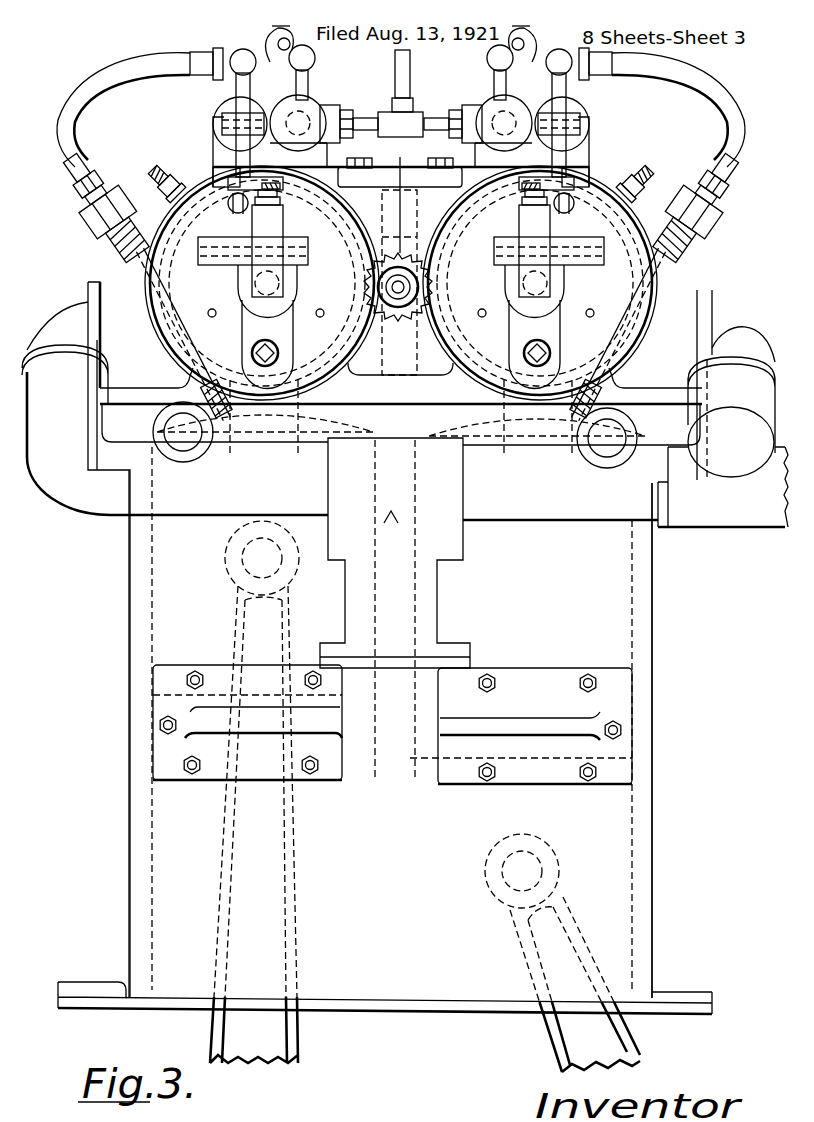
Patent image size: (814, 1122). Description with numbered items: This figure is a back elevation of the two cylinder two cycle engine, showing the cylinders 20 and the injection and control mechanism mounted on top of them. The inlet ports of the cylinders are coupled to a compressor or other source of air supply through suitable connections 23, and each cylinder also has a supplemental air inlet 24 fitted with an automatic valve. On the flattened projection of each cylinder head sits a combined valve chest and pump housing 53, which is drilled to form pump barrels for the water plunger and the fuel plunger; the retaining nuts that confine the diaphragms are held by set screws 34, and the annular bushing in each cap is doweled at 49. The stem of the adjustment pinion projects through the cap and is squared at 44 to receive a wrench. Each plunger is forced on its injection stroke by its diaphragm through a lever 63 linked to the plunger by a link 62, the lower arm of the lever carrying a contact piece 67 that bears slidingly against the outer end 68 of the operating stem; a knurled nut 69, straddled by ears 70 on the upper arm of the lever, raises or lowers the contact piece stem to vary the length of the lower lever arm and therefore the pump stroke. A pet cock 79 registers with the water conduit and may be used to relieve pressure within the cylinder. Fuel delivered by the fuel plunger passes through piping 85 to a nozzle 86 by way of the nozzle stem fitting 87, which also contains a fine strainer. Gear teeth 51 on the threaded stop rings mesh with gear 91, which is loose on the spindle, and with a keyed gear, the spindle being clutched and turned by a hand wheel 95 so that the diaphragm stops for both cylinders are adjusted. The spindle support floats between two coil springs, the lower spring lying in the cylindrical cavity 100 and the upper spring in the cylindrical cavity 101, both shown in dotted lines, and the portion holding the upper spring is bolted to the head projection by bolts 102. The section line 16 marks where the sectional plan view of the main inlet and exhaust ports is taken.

The crosshead guide plate 16 is at (120, 724).
The cylinders 20 is at (168, 625).
The connections 23 is at (438, 605).
The supplemental air inlet 24 is at (72, 320).
The set screws 34 is at (160, 183).
The squared end of adjustment pinion stem 44 is at (274, 352).
The dowel 49 is at (209, 315).
The gear teeth 51 is at (401, 431).
The combined valve chest and pump housing 53 is at (215, 149).
The link 62 is at (226, 117).
The lever 63 is at (562, 175).
The contact piece 67 is at (281, 291).
The outer end of operating stem 68 is at (262, 300).
The knurled nut 69 is at (282, 188).
The ears 70 is at (283, 201).
The pet cock 79 is at (281, 52).
The piping 85 is at (86, 87).
The nozzle 86 is at (236, 444).
The nozzle stem fitting 87 is at (130, 274).
The gear 91 is at (386, 312).
The hand wheel 95 is at (413, 288).
The cylindrical cavity 100 is at (398, 328).
The cylindrical cavity 101 is at (407, 197).
The bolts 102 is at (377, 156).